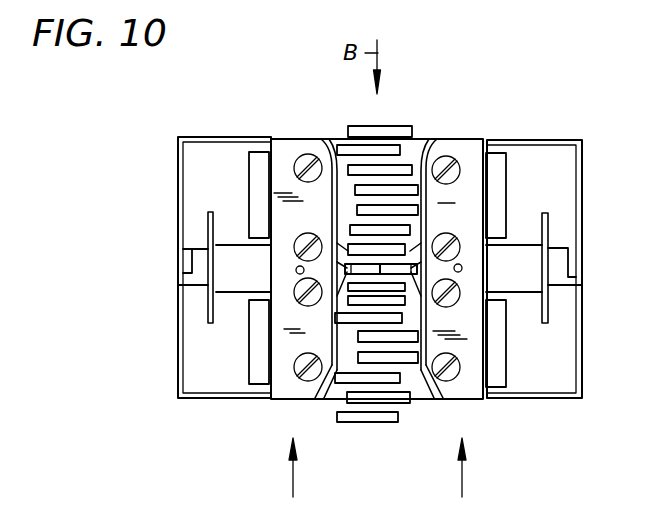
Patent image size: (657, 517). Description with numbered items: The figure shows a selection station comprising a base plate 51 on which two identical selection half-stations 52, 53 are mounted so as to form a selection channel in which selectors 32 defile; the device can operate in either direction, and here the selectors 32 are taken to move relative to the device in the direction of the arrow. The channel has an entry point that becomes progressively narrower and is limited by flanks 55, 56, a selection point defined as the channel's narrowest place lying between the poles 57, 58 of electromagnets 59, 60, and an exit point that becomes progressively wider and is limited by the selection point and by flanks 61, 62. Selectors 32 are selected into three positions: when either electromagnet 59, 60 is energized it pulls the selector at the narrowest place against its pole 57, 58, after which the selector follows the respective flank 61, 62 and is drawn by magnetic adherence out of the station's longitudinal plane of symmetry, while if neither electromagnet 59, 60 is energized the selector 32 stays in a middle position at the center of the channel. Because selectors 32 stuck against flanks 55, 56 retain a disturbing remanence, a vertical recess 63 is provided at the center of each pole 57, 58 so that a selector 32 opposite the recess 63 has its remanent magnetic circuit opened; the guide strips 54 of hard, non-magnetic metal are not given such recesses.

The selector 32 is at (393, 130).
The base plate 51 is at (560, 377).
The selection half-station 52 is at (297, 478).
The selection half-station 53 is at (463, 478).
The guide strip 54 is at (349, 268).
The flank 55 is at (325, 139).
The flank 56 is at (425, 139).
The pole 57 is at (350, 254).
The pole 58 is at (408, 247).
The electromagnet 59 is at (229, 246).
The electromagnet 60 is at (523, 245).
The flank 61 is at (328, 399).
The flank 62 is at (425, 399).
The vertical recess 63 is at (316, 256).